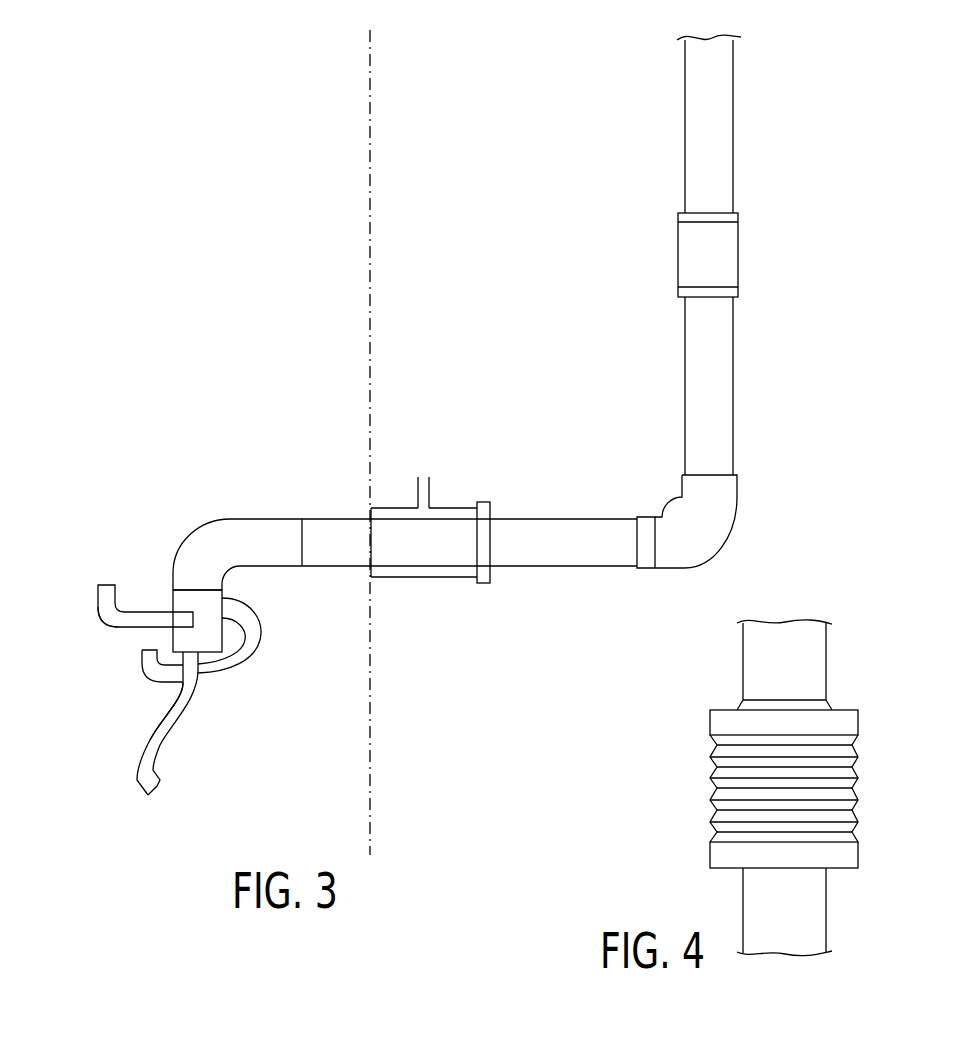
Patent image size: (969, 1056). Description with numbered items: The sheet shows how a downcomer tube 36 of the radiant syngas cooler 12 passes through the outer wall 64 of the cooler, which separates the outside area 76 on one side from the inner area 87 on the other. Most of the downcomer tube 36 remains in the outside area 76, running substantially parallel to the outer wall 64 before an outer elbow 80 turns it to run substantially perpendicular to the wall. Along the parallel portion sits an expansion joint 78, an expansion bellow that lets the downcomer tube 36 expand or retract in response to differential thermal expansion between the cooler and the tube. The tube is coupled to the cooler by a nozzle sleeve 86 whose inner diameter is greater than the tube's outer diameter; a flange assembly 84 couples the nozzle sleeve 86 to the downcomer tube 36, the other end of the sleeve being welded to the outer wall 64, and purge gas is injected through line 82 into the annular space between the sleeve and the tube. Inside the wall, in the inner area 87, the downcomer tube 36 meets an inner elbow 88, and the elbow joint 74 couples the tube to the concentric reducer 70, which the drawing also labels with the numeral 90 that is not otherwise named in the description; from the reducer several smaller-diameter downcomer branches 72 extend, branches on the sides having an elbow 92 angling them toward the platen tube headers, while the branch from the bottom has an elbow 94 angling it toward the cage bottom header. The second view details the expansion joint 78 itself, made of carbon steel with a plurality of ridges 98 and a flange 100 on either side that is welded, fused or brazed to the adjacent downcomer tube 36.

In FIG. 3, the radiant syngas cooler 12 is at (768, 44).
In FIG. 3, the downcomer tube 36 is at (734, 122).
In FIG. 4, the downcomer tube 36 is at (743, 661).
In FIG. 3, the outer wall 64 is at (369, 65).
In FIG. 3, the concentric reducer 70 is at (165, 595).
In FIG. 3, the downcomer branch 72 is at (92, 600).
In FIG. 3, the elbow joint 74 is at (508, 526).
In FIG. 3, the outside area 76 is at (527, 326).
In FIG. 3, the expansion joint 78 is at (739, 251).
In FIG. 3, the outer elbow 80 is at (738, 506).
In FIG. 3, the purge gas line 82 is at (430, 491).
In FIG. 3, the flange assembly 84 is at (491, 511).
In FIG. 3, the nozzle sleeve 86 is at (402, 579).
In FIG. 3, the inner area 87 is at (262, 326).
In FIG. 3, the inner elbow 88 is at (190, 536).
In FIG. 3, the manifold 90 is at (172, 602).
In FIG. 3, the elbow 92 is at (105, 622).
In FIG. 3, the elbow 94 is at (128, 700).
In FIG. 4, the ridges 98 is at (692, 788).
In FIG. 4, the flange 100 is at (710, 720).